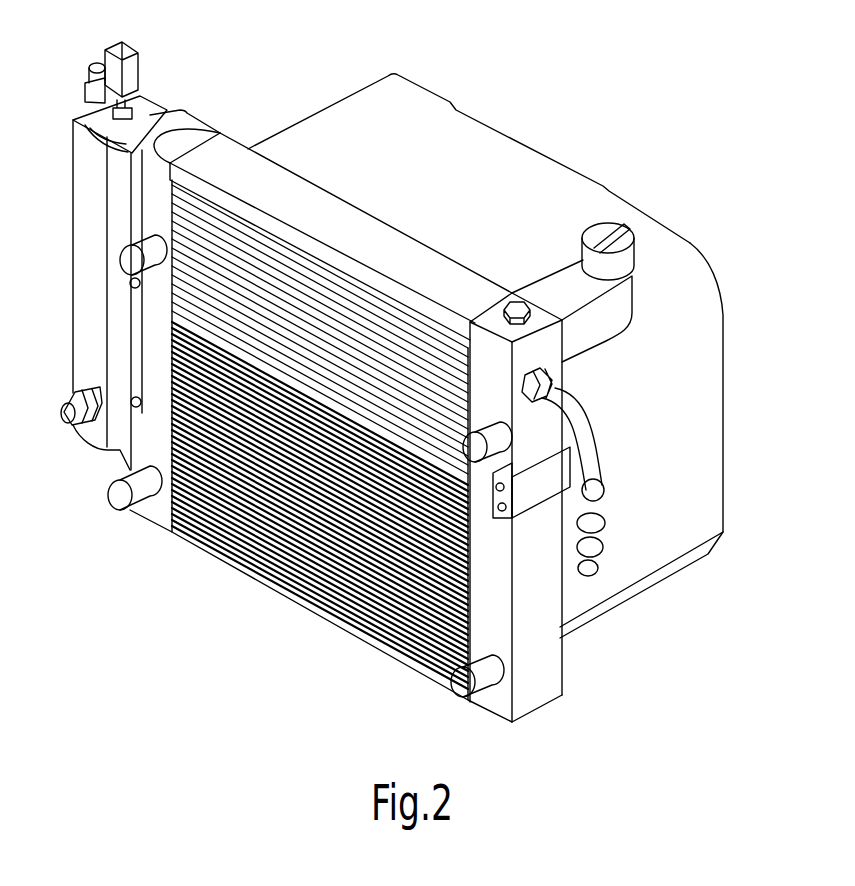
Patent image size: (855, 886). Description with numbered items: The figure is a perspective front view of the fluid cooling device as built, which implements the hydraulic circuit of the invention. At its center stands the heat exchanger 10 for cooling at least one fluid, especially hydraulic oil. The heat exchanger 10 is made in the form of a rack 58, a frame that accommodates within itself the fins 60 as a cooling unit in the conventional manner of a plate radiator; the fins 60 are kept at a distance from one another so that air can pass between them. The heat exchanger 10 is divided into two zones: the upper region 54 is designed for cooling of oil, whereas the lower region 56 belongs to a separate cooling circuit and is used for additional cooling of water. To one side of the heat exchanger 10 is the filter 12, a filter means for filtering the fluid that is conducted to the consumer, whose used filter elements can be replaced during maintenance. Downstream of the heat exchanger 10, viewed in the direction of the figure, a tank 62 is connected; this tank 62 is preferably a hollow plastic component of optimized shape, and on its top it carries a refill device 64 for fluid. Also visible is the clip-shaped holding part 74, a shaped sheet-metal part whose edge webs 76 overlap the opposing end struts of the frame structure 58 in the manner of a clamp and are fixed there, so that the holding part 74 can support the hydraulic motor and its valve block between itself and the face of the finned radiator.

The heat exchanger 10 is at (232, 168).
The filter 12 is at (67, 184).
The upper region 54 is at (450, 218).
The lower region 56 is at (345, 530).
The rack 58 is at (333, 224).
The fins 60 is at (243, 512).
The tank 62 is at (649, 392).
The refill device 64 is at (632, 236).
The holding part 74 is at (540, 482).
The edge webs 76 is at (135, 340).